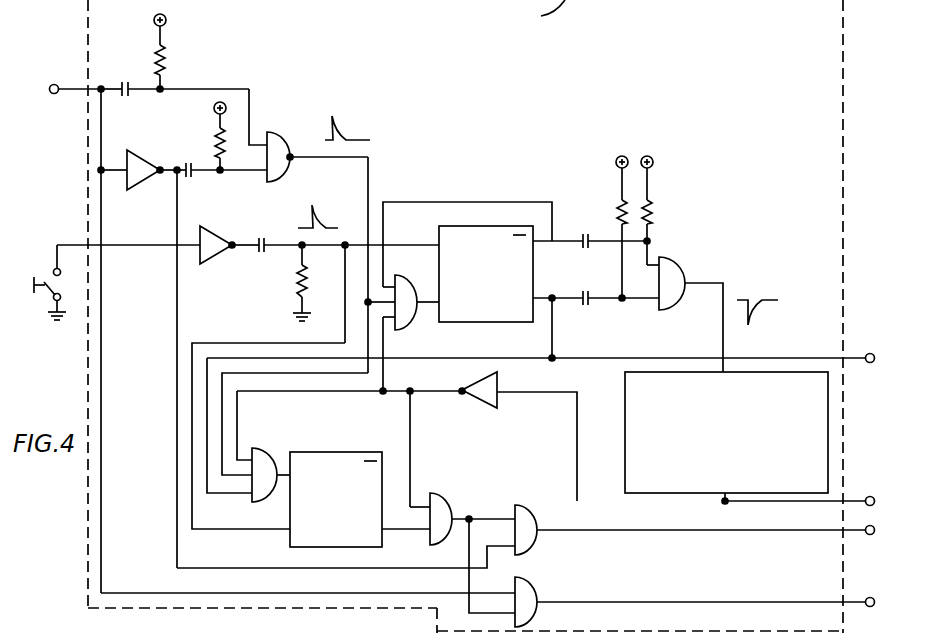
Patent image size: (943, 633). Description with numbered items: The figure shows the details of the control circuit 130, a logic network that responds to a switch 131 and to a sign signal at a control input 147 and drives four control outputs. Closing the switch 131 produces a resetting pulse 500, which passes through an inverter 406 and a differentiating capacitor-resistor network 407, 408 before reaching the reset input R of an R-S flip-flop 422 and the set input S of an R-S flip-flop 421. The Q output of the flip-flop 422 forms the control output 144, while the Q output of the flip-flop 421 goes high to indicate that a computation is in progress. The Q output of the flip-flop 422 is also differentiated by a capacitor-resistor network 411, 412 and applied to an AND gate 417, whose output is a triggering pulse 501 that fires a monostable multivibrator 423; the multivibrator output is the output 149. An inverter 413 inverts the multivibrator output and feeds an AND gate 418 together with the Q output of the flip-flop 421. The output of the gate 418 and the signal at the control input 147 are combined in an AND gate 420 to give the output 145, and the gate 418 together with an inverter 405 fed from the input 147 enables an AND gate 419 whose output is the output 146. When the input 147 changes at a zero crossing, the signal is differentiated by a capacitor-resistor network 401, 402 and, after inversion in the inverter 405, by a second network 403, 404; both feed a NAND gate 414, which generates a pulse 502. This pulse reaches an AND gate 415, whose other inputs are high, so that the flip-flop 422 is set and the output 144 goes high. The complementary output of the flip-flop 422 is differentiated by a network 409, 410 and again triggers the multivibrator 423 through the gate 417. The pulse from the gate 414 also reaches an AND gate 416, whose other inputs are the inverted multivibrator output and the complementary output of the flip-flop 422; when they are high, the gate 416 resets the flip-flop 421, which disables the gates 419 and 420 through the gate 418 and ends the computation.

The control circuit 130 is at (805, 30).
The switch 131 is at (53, 266).
The control output 144 is at (548, 330).
The output 145 is at (713, 616).
The output 146 is at (870, 536).
The control input 147 is at (53, 84).
The output 149 is at (870, 496).
The differentiating capacitor 401 is at (140, 58).
The differentiating resistor 402 is at (166, 64).
The differentiating capacitor 403 is at (190, 161).
The differentiating resistor 404 is at (212, 142).
The inverter 405 is at (147, 185).
The inverter 406 is at (222, 232).
The differentiating capacitor 407 is at (264, 236).
The differentiating resistor 408 is at (299, 288).
The differentiating capacitor 409 is at (599, 222).
The differentiating resistor 410 is at (651, 205).
The differentiating capacitor 411 is at (586, 308).
The differentiating resistor 412 is at (619, 205).
The inverter 413 is at (492, 407).
The NAND gate 414 is at (281, 136).
The AND gate 415 is at (407, 325).
The AND gate 416 is at (265, 448).
The AND gate 417 is at (675, 263).
The AND gate 418 is at (445, 500).
The AND gate 419 is at (530, 506).
The AND gate 420 is at (539, 591).
The R-S flip-flop 421 is at (361, 451).
The R-S flip-flop 422 is at (485, 324).
The monostable multivibrator 423 is at (623, 398).
The resetting pulse 500 is at (313, 206).
The triggering pulse 501 is at (751, 300).
The pulse 502 is at (333, 117).